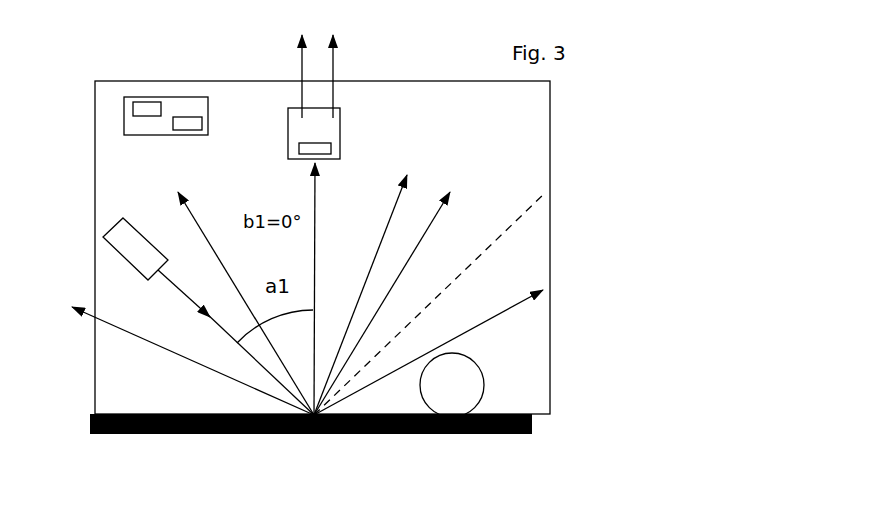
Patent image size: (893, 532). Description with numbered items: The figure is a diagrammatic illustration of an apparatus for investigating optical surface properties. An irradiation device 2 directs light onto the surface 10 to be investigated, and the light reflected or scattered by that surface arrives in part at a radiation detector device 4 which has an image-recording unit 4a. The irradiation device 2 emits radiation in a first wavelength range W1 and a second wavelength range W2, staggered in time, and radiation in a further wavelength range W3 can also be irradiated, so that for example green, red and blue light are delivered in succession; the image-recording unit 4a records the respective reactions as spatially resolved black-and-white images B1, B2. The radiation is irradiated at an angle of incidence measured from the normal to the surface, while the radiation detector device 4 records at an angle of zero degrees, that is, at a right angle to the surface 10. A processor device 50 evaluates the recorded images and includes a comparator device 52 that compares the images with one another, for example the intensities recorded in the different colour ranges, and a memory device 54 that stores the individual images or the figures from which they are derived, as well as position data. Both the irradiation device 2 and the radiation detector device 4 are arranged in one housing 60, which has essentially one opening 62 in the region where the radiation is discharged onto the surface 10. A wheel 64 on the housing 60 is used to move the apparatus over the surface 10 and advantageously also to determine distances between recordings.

The irradiation device 2 is at (122, 235).
The radiation detector device 4 is at (333, 128).
The image-recording unit 4a is at (328, 150).
The surface 10 is at (490, 414).
The processor device 50 is at (140, 127).
The comparator device 52 is at (193, 123).
The memory device 54 is at (132, 108).
The housing 60 is at (550, 160).
The opening 62 is at (310, 420).
The wheel 64 is at (463, 368).
The first wavelength range W1 is at (183, 297).
The second wavelength range W2 is at (217, 330).
The third wavelength range W3 is at (248, 360).
The image B1 is at (291, 64).
The image B2 is at (344, 64).